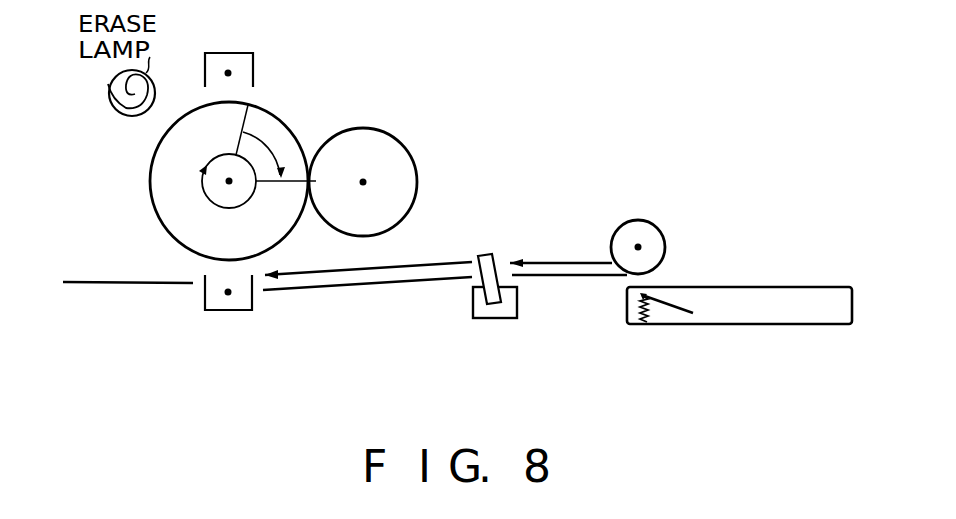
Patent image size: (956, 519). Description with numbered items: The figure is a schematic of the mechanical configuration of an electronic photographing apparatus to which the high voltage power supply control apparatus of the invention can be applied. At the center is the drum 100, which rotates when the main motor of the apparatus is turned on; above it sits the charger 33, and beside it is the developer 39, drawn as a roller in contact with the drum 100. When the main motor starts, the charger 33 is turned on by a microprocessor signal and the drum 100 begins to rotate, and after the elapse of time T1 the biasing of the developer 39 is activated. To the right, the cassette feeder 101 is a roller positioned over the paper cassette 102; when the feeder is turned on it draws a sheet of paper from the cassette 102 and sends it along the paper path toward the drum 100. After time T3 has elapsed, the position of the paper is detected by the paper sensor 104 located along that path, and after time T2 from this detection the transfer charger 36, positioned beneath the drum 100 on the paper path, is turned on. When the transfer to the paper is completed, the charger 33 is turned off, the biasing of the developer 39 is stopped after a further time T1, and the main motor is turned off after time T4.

The charger 33 is at (224, 52).
The developer 39 is at (385, 133).
The drum 100 is at (151, 183).
The transfer charger 36 is at (225, 310).
The paper sensor 104 is at (477, 318).
The cassette feeder 101 is at (657, 229).
The paper cassette 102 is at (646, 325).
The time T1 is at (267, 145).
The time T2 is at (416, 265).
The time T3 is at (548, 262).
The time T4 is at (220, 207).